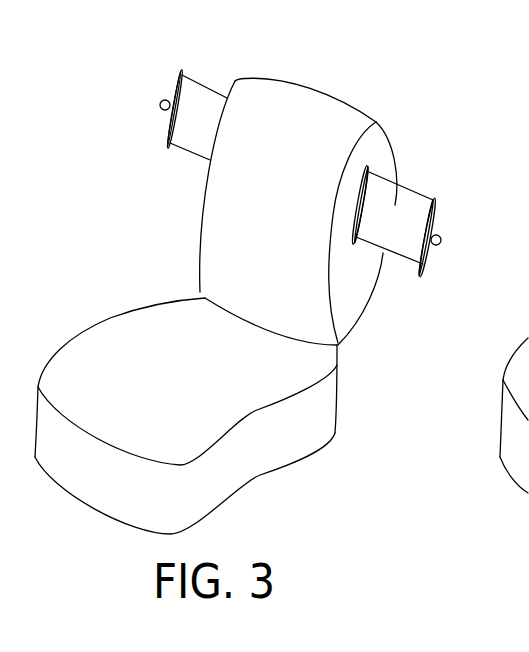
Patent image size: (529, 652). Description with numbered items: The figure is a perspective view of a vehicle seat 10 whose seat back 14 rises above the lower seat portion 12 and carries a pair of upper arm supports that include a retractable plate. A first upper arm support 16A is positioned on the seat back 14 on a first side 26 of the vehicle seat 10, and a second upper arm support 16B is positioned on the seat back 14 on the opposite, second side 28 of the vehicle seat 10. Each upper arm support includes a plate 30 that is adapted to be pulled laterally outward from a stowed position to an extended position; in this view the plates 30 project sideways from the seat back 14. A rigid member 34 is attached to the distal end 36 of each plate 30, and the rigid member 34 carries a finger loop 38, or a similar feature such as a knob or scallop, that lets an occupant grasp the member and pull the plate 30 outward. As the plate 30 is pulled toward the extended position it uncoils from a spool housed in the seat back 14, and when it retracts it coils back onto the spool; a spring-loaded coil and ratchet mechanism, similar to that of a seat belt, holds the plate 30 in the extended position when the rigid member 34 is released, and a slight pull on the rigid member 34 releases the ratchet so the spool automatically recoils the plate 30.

The vehicle seat 10 is at (263, 285).
The seat cushion 12 is at (182, 393).
The seat back 14 is at (307, 191).
The first upper arm support 16A is at (405, 192).
The second upper arm support 16B is at (194, 152).
The first side 26 is at (376, 143).
The second side 28 is at (232, 88).
The plate 30 is at (203, 99).
The rigid member 34 is at (166, 140).
The distal end 36 is at (176, 123).
The finger loop 38 is at (160, 104).